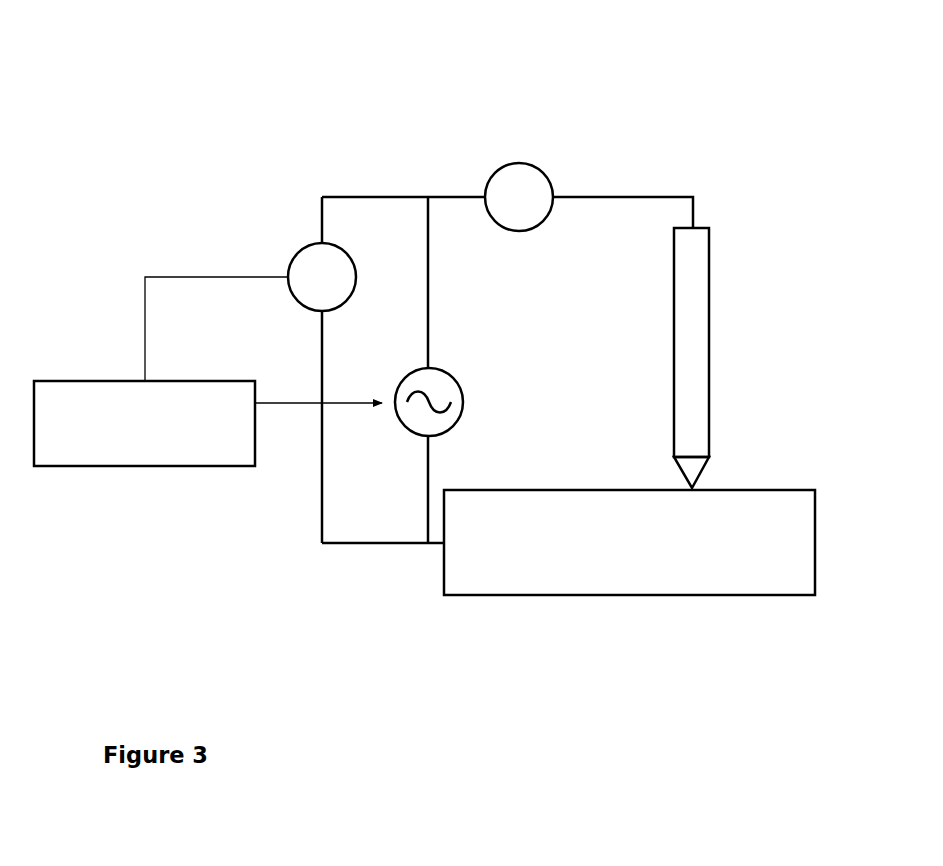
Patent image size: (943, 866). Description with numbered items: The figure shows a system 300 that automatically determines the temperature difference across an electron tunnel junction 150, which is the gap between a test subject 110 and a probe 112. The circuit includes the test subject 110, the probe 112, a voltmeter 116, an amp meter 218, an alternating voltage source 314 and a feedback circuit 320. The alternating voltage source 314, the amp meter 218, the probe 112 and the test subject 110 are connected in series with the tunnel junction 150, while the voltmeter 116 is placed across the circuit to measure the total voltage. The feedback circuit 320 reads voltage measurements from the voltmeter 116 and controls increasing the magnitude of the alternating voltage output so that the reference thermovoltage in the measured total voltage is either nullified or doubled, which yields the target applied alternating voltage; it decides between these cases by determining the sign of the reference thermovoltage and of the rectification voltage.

The system 300 is at (120, 56).
The feedback circuit 320 is at (77, 381).
The voltmeter 116 is at (349, 299).
The amp meter 218 is at (545, 218).
The AC voltage source 314 is at (452, 428).
The probe 112 is at (709, 352).
The electron tunnel junction 150 is at (674, 480).
The test subject 110 is at (629, 542).